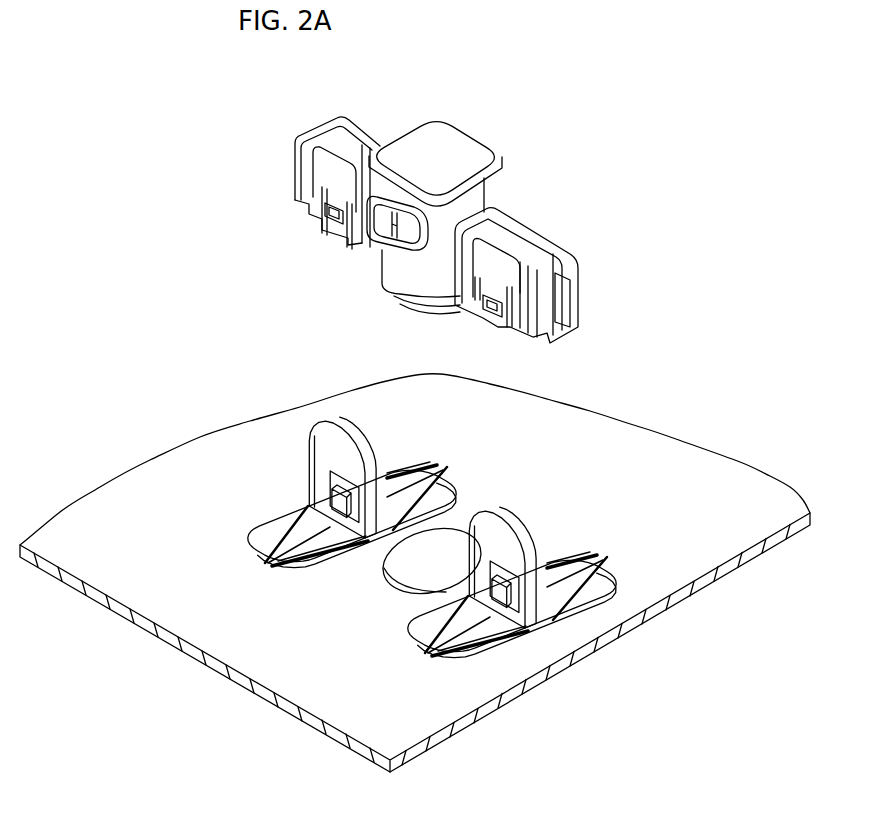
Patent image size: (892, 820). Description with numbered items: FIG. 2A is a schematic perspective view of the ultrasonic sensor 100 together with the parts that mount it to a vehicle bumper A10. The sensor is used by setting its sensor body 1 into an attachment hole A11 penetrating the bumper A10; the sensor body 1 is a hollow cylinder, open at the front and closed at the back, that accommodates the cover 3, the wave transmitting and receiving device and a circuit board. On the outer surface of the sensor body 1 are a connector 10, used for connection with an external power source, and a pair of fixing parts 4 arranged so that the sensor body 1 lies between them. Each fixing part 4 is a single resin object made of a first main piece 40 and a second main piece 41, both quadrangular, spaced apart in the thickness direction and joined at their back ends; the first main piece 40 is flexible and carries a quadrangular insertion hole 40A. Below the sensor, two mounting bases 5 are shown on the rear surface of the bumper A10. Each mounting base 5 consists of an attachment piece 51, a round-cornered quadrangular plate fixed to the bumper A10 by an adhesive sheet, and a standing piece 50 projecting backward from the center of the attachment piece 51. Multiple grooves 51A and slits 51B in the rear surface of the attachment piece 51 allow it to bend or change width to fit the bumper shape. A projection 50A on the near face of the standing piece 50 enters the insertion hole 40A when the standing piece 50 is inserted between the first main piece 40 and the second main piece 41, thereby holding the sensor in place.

The ultrasonic sensor 100 is at (435, 214).
The sensor body 1 is at (400, 265).
The cover 3 is at (398, 299).
The connector 10 is at (377, 222).
The fixing part 4 is at (334, 160).
The first main piece 40 is at (328, 177).
The insertion hole 40A is at (338, 218).
The second main piece 41 is at (574, 298).
The mounting base 5 is at (439, 576).
The standing piece 50 is at (313, 437).
The projection 50A is at (330, 497).
The attachment piece 51 is at (263, 540).
The grooves 51A is at (405, 463).
The slits 51B is at (438, 456).
The bumper A10 is at (696, 470).
The attachment hole A11 is at (432, 566).